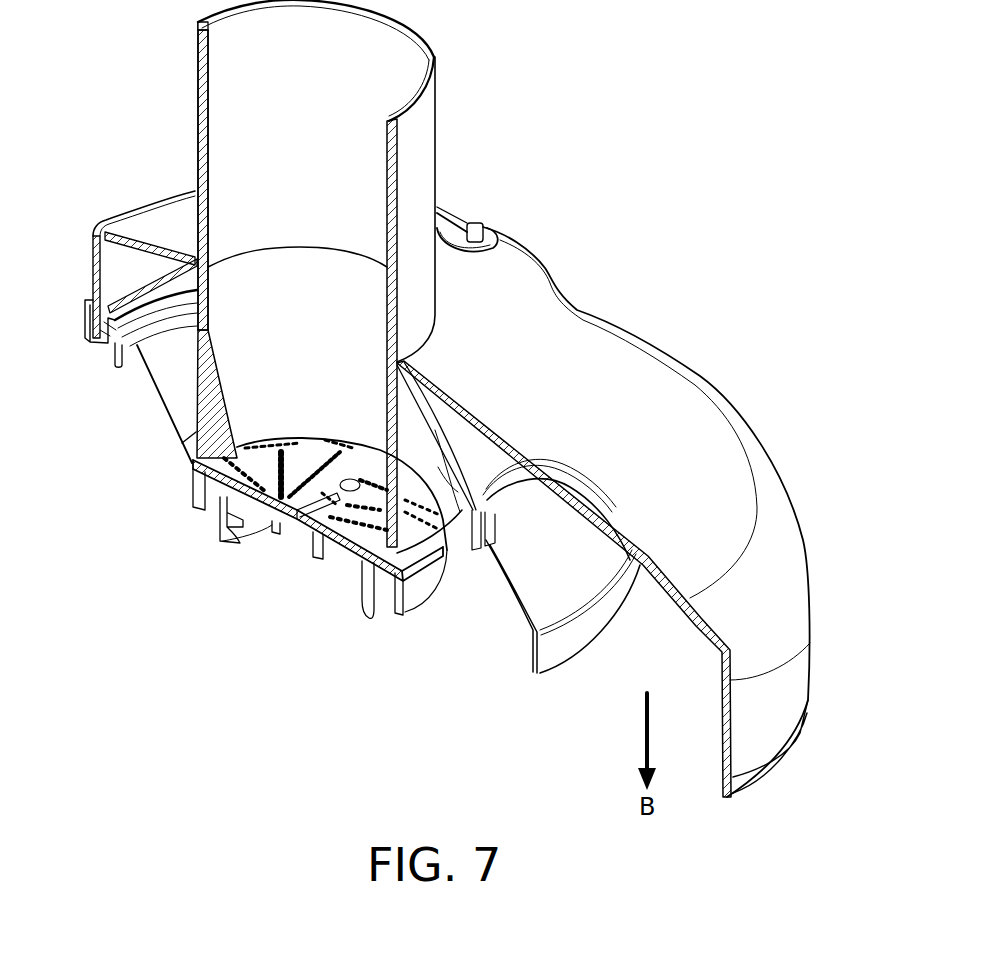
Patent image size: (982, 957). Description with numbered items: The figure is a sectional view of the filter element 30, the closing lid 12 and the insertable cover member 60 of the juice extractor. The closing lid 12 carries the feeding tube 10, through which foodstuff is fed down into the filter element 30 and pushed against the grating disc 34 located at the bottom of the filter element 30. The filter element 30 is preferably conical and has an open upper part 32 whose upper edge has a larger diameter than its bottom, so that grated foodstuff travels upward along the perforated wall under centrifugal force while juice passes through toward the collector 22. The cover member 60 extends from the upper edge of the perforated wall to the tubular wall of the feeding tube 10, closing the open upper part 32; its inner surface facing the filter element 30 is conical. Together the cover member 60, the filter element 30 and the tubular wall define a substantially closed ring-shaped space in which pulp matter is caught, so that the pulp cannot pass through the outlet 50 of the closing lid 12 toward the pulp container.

The feeding tube 10 is at (423, 135).
The closing lid 12 is at (630, 350).
The collector 22 is at (530, 583).
The filter element 30 is at (168, 400).
The open upper part 32 is at (138, 322).
The grating disc 34 is at (296, 440).
The outlet 50 is at (576, 588).
The cover member 60 is at (168, 282).